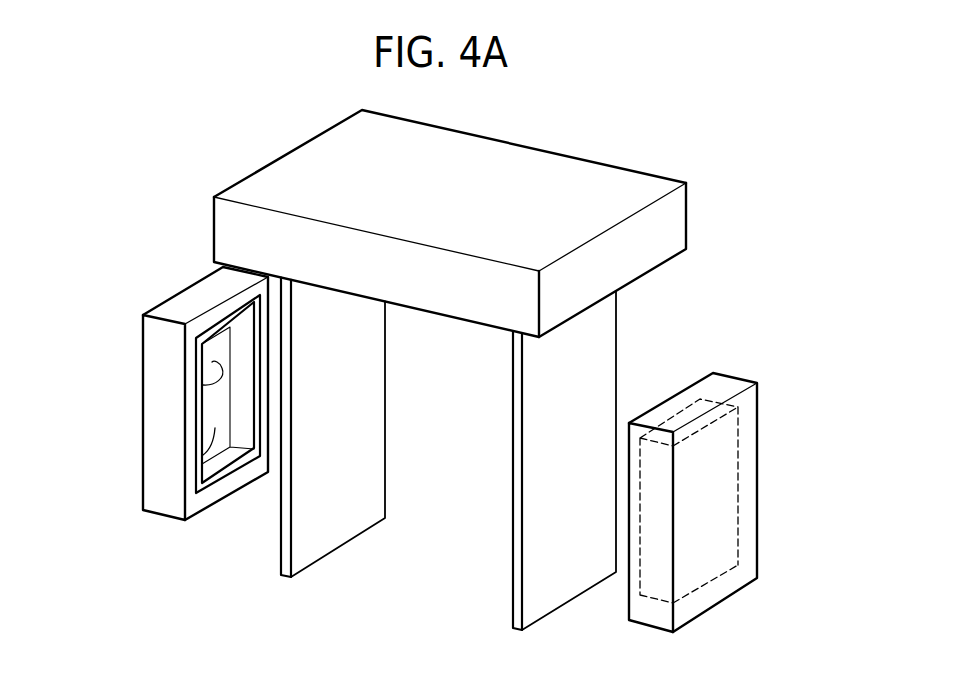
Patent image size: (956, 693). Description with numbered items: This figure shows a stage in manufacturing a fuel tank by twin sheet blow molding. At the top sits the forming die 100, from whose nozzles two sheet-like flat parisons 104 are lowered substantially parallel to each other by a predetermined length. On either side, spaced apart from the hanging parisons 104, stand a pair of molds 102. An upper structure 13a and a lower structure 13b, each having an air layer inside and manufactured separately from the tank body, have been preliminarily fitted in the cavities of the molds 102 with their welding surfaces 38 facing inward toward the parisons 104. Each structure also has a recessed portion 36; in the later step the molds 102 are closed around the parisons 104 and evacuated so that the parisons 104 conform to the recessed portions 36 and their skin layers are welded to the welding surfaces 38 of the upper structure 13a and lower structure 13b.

The forming die 100 is at (668, 214).
The mold 102 is at (152, 348).
The flat parison 104 is at (597, 337).
The upper structure 13a is at (219, 396).
The lower structure 13b is at (738, 523).
The recessed portion 36 is at (203, 385).
The welding surface 38 is at (203, 455).